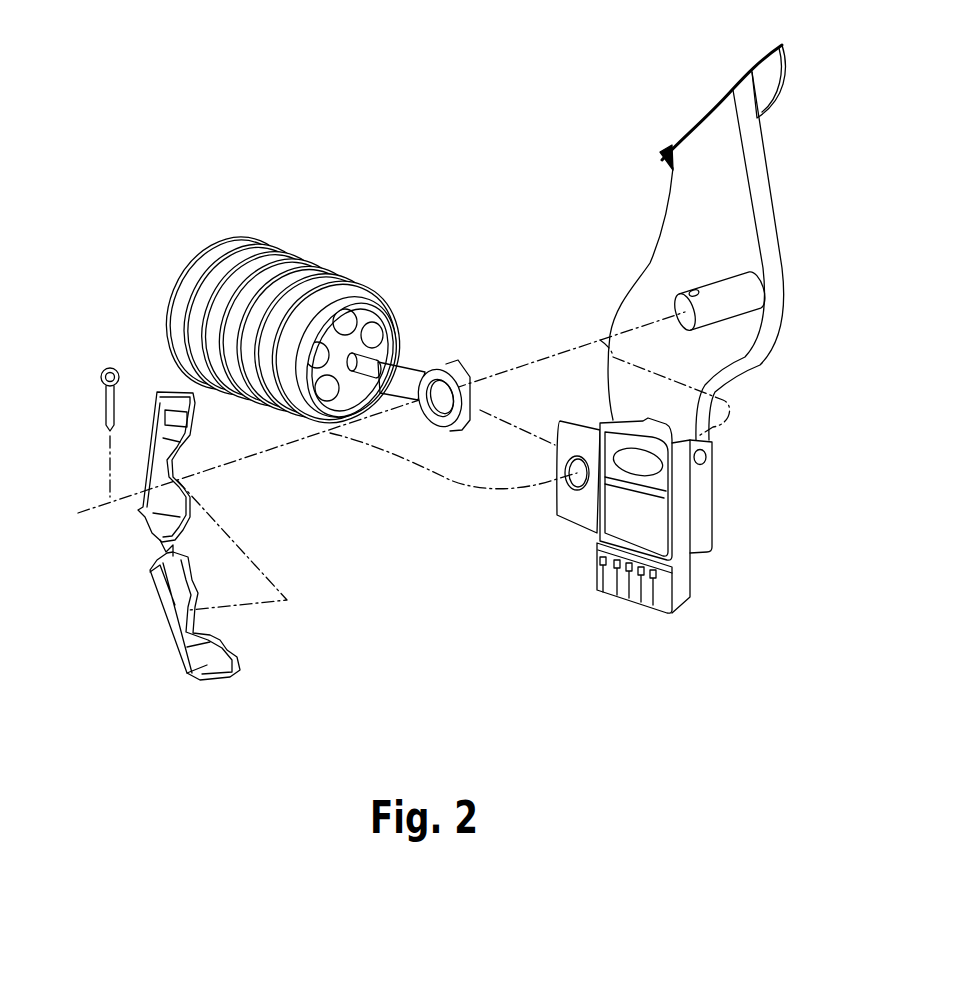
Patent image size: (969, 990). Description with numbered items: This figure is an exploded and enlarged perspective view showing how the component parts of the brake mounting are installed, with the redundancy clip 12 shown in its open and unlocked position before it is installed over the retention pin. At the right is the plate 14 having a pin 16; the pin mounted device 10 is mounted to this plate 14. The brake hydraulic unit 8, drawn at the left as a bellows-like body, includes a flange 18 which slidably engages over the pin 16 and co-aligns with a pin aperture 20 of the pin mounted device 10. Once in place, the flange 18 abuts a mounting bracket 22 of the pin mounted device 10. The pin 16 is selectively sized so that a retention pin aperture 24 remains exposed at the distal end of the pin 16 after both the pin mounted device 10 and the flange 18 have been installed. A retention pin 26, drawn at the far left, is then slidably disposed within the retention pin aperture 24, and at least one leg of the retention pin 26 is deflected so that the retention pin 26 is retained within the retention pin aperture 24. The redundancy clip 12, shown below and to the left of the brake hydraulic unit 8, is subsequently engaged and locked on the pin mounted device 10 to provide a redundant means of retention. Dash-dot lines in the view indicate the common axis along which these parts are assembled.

The brake hydraulic unit 8 is at (343, 288).
The pin mounted device 10 is at (682, 593).
The redundancy clip 12 is at (160, 605).
The plate 14 is at (763, 224).
The pin 16 is at (718, 304).
The flange 18 is at (448, 358).
The pin aperture 20 is at (585, 470).
The mounting bracket 22 is at (583, 513).
The retention pin aperture 24 is at (689, 292).
The retention pin 26 is at (104, 385).